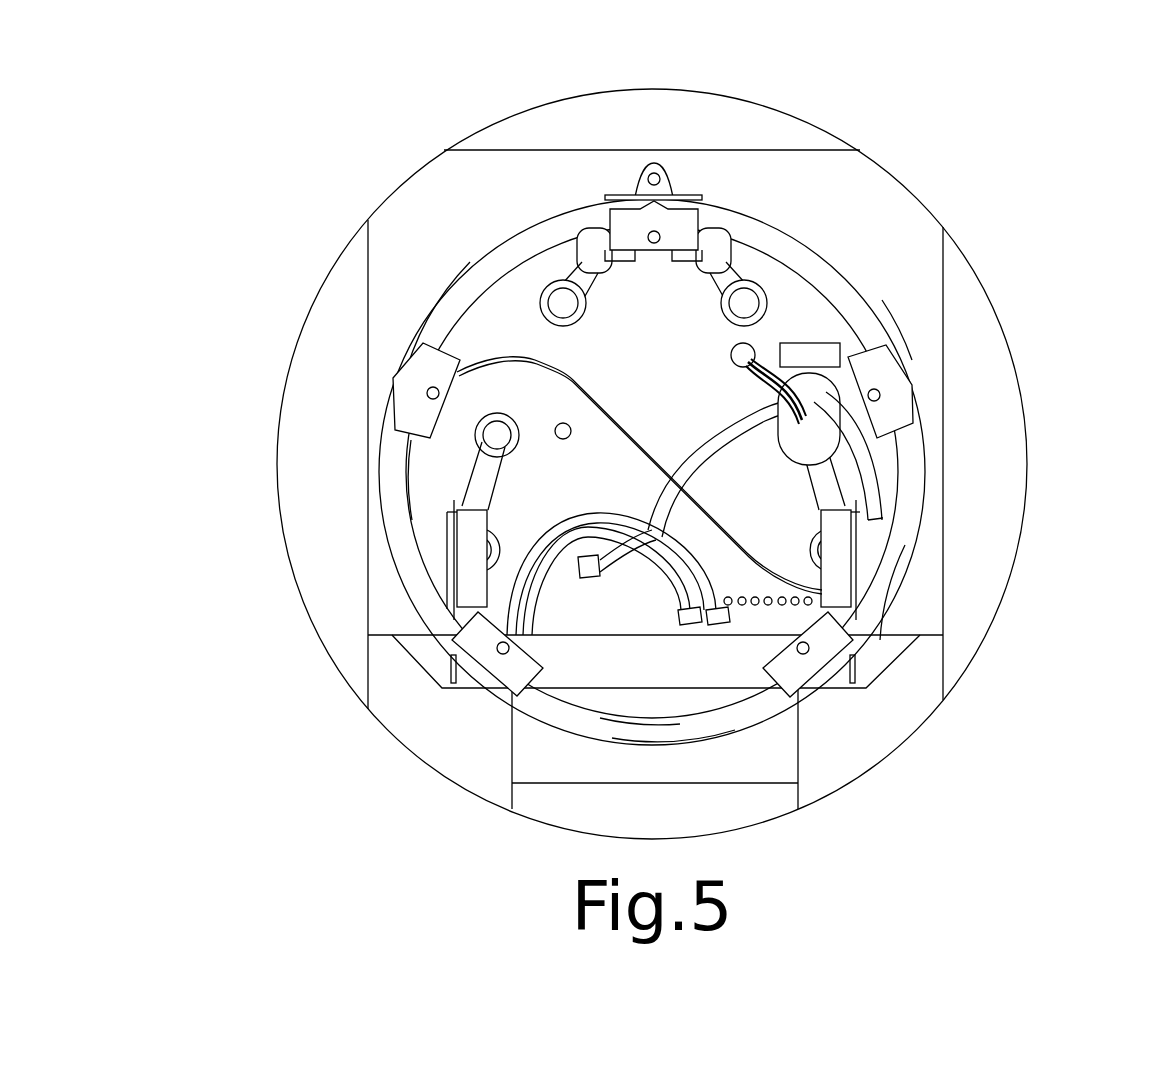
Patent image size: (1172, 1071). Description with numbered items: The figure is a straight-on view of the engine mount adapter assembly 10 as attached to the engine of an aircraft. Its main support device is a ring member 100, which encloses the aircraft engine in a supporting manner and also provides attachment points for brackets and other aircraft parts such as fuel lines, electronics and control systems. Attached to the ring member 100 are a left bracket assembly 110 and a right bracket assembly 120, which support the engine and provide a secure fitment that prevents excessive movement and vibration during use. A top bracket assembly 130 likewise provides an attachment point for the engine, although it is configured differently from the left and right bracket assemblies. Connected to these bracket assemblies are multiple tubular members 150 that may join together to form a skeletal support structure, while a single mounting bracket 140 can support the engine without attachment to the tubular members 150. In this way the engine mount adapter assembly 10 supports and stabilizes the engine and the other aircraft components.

The engine mount adapter assembly 10 is at (870, 246).
The ring member 100 is at (430, 607).
The left bracket assembly 110 is at (475, 556).
The right bracket assembly 120 is at (833, 560).
The top bracket assembly 130 is at (645, 173).
The mounting bracket 140 is at (673, 217).
The tubular members 150 is at (573, 285).